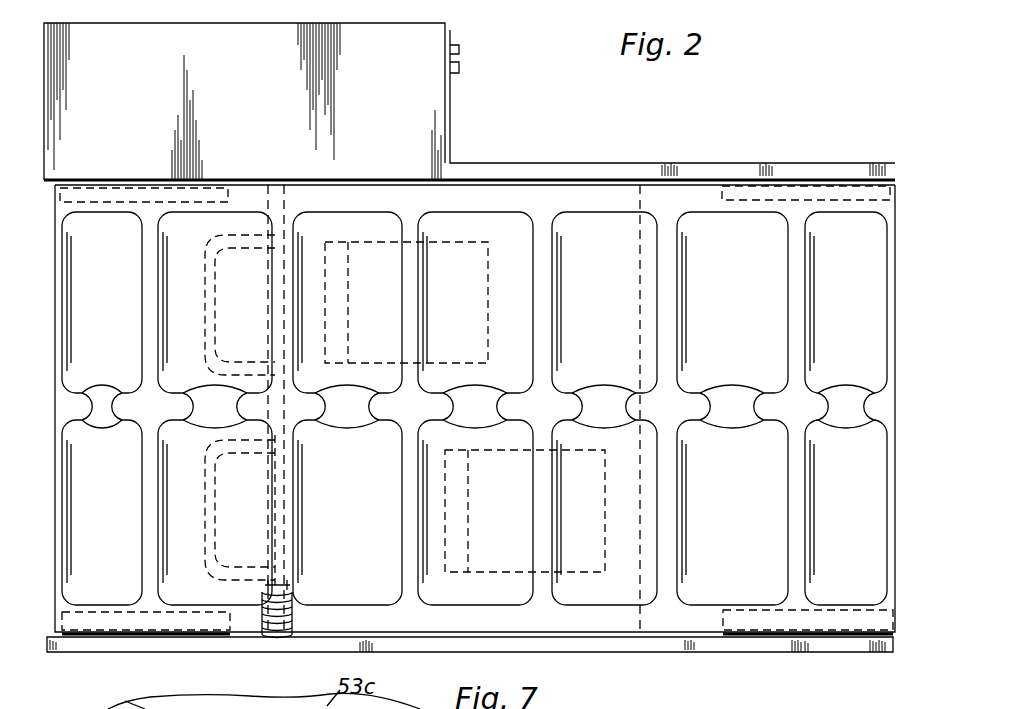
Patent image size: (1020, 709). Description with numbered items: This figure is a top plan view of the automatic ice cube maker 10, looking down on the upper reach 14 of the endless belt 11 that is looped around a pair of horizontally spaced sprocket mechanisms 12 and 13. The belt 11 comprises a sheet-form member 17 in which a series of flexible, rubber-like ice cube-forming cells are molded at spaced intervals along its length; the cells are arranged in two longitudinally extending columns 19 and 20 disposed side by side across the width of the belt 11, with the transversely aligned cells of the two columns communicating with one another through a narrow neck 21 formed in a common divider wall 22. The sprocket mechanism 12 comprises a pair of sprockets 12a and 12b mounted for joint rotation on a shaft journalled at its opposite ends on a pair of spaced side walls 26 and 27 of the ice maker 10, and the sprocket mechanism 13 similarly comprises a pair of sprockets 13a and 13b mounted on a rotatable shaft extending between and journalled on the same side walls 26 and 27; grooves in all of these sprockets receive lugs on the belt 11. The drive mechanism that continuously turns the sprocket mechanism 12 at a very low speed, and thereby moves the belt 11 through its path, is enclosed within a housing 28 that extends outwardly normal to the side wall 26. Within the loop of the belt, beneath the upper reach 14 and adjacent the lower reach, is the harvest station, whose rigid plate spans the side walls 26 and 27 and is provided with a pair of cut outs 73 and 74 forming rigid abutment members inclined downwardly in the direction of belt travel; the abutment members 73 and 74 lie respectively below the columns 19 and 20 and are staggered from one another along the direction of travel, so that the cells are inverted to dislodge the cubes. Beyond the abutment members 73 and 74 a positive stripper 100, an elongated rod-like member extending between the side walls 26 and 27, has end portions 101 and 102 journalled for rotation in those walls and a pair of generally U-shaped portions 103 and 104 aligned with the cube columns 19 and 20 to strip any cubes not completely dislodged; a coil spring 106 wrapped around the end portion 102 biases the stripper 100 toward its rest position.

The automatic ice cube maker 10 is at (552, 160).
The endless belt 11 is at (662, 203).
The sprocket mechanism 12 is at (207, 638).
The sprocket 12a is at (105, 648).
The sprocket 12b is at (198, 200).
The sprocket mechanism 13 is at (742, 640).
The sprocket 13a is at (790, 648).
The sprocket 13b is at (797, 198).
The upper reach 14 is at (493, 200).
The sheet-form member 17 is at (420, 216).
The column of cells 19 is at (838, 263).
The column of cells 20 is at (855, 580).
The narrow neck 21 is at (366, 398).
The common divider wall 22 is at (386, 405).
The side wall 26 is at (712, 170).
The side wall 27 is at (683, 640).
The housing 28 is at (417, 52).
The cut out forming abutment member 73 is at (457, 215).
The cut out forming abutment member 74 is at (490, 580).
The positive stripper 100 is at (200, 539).
The end portion 101 is at (271, 207).
The end portion 102 is at (278, 648).
The U-shaped portion 103 is at (210, 300).
The U-shaped portion 104 is at (210, 515).
The coil spring 106 is at (298, 620).